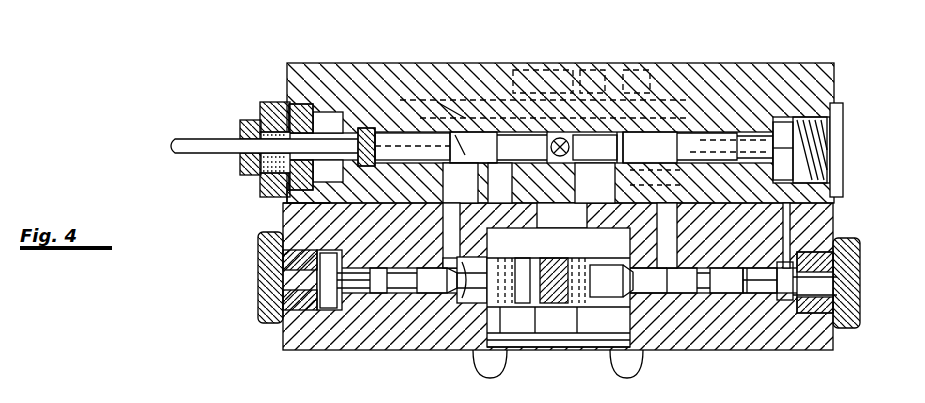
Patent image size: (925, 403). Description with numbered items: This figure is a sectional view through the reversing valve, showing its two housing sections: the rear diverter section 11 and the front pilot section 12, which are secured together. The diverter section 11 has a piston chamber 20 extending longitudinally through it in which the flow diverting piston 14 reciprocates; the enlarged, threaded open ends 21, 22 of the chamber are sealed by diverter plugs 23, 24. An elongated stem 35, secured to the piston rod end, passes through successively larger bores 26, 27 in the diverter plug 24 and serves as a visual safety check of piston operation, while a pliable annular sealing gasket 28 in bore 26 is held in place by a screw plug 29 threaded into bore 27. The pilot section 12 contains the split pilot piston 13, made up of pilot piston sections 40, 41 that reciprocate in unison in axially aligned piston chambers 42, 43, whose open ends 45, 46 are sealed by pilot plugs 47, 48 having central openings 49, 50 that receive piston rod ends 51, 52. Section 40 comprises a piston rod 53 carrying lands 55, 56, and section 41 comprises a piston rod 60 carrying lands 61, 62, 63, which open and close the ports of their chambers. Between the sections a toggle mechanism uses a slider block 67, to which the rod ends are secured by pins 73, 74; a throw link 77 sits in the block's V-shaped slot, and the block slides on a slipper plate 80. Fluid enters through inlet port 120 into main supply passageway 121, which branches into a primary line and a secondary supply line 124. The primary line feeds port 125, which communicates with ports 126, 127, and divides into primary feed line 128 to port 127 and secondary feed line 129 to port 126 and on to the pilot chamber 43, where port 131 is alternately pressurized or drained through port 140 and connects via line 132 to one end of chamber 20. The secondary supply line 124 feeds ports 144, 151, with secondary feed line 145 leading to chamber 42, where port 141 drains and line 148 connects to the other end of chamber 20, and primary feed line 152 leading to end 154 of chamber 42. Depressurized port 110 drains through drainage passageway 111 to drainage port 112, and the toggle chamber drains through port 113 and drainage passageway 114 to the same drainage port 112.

The diverter section 11 is at (835, 83).
The pilot section 12 is at (825, 352).
The pilot piston 13 is at (763, 297).
The flow diverting piston 14 is at (365, 128).
The piston chamber 20 is at (762, 135).
The open end 21 is at (808, 120).
The open end 22 is at (289, 78).
The diverter plug 23 is at (840, 120).
The diverter plug 24 is at (262, 110).
The plug bore 26 is at (270, 193).
The plug bore 27 is at (263, 186).
The sealing gasket 28 is at (267, 102).
The screw plug 29 is at (240, 124).
The stem 35 is at (182, 136).
The pilot piston section 40 is at (662, 297).
The pilot piston section 41 is at (424, 294).
The piston chamber 42 is at (747, 266).
The piston chamber 43 is at (365, 295).
The open end 45 is at (836, 224).
The open end 46 is at (280, 223).
The pilot plug 47 is at (858, 268).
The pilot plug 48 is at (264, 291).
The opening 49 is at (858, 291).
The opening 50 is at (263, 313).
The piston rod end 51 is at (789, 268).
The piston rod end 52 is at (267, 271).
The piston rod 53 is at (754, 291).
The piston head 55 is at (684, 294).
The piston head 56 is at (724, 294).
The piston rod 60 is at (438, 290).
The piston head 61 is at (473, 267).
The piston head 62 is at (398, 294).
The piston head 63 is at (333, 311).
The slider block 67 is at (583, 267).
The pin 73 is at (577, 320).
The pin 74 is at (505, 333).
The throw link 77 is at (537, 313).
The slipper plate 80 is at (613, 323).
The port 110 is at (548, 146).
The drainage passageway 111 is at (598, 147).
The drainage port 112 is at (663, 68).
The port 113 is at (433, 157).
The drainage passageway 114 is at (604, 165).
The inlet port 120 is at (557, 68).
The main supply passageway 121 is at (366, 126).
The secondary supply line 124 is at (483, 113).
The port 125 is at (622, 68).
The port 126 is at (432, 118).
The port 127 is at (475, 147).
The primary feed line 128 is at (502, 186).
The secondary feed line 129 is at (467, 123).
The port 131 is at (445, 264).
The line 132 is at (445, 220).
The port 140 is at (478, 262).
The port 141 is at (660, 293).
The port 144 is at (770, 130).
The secondary feed line 145 is at (767, 117).
The line 148 is at (678, 224).
The port 151 is at (632, 148).
The primary feed line 152 is at (640, 190).
The end 154 is at (610, 275).